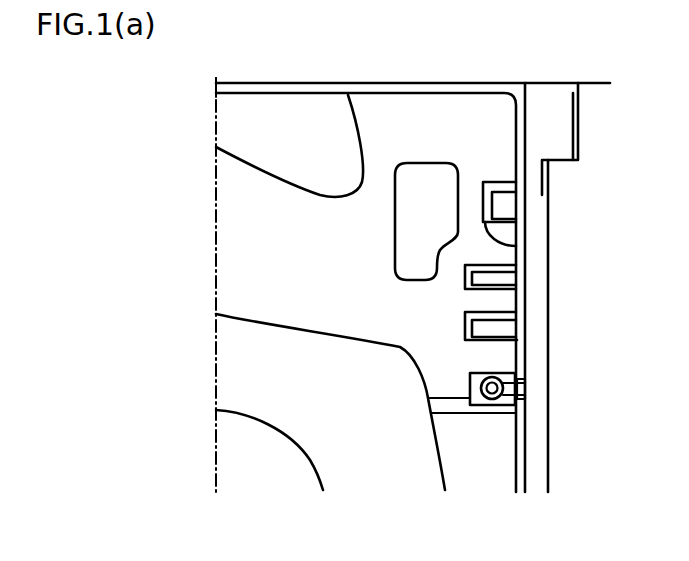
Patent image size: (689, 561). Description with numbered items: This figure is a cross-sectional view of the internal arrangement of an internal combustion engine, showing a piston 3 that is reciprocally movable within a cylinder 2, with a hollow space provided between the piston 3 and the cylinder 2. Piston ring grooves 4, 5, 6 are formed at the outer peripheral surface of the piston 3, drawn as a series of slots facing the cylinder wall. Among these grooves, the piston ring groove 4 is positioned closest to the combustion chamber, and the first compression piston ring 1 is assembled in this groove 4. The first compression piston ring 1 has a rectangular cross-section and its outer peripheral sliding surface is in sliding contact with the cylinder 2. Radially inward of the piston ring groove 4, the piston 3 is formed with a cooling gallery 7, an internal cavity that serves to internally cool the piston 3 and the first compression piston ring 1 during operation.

The first compression piston ring 1 is at (513, 208).
The cylinder 2 is at (545, 95).
The piston 3 is at (424, 110).
The piston ring groove 4 is at (513, 247).
The piston ring groove 5 is at (465, 278).
The piston ring groove 6 is at (467, 332).
The cooling gallery 7 is at (417, 192).